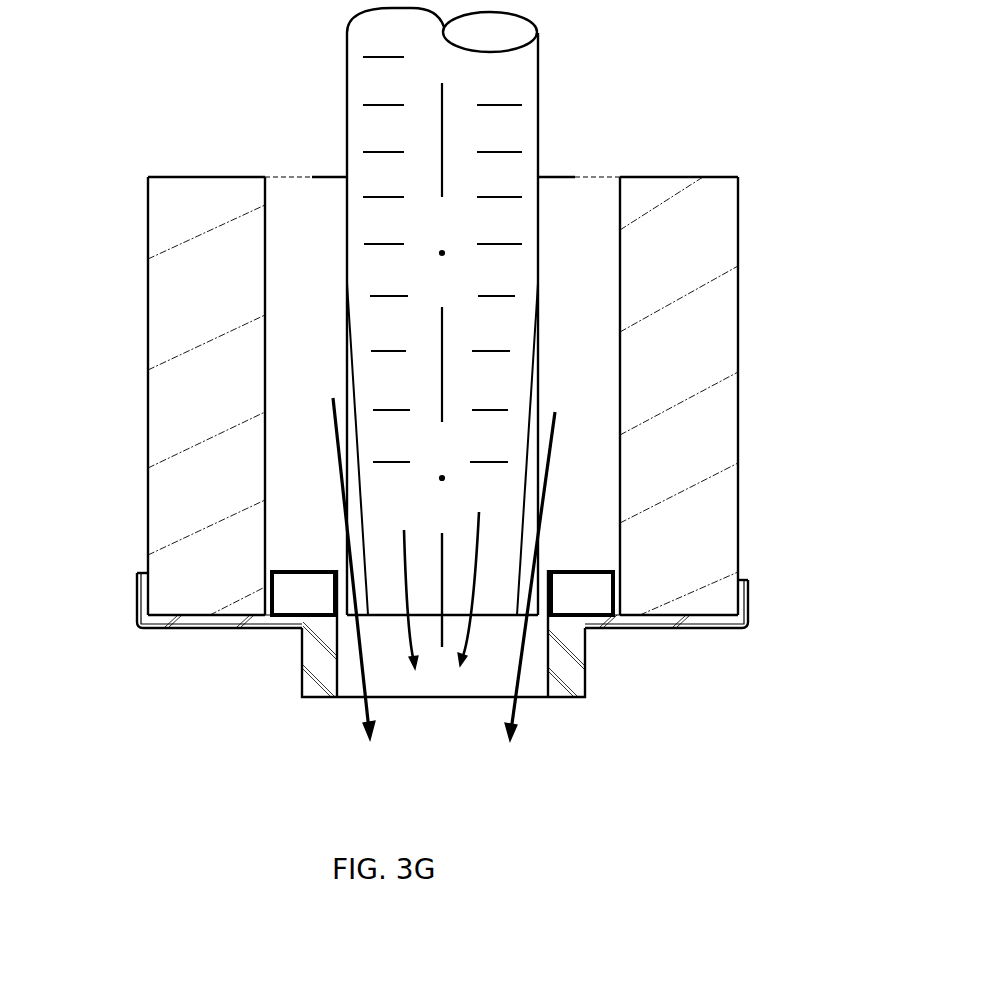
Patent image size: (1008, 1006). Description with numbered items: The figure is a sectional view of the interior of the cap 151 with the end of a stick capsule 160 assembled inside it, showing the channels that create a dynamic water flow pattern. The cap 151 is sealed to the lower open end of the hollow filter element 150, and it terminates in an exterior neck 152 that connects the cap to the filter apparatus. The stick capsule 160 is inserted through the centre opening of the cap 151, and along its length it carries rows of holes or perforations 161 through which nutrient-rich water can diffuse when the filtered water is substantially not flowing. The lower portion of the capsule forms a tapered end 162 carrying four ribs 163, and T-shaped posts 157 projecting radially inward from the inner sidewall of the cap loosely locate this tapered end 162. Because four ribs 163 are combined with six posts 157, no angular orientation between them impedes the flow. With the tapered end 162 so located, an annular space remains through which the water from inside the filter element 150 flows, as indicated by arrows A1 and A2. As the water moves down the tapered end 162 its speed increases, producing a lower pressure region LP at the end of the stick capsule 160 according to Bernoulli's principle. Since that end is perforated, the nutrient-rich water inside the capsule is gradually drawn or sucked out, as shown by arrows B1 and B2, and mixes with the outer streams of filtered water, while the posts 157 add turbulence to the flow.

The filter element 150 is at (700, 323).
The cap 151 is at (688, 621).
The exterior neck 152 is at (562, 671).
The T-shaped posts 157 is at (553, 592).
The stick capsule 160 is at (498, 80).
The holes or perforations 161 is at (493, 152).
The tapered end 162 is at (409, 436).
The ribs 163 is at (356, 519).
The arrow A1 is at (354, 583).
The arrow A2 is at (519, 590).
The arrow B1 is at (402, 608).
The arrow B2 is at (476, 599).
The lower pressure region LP is at (433, 605).